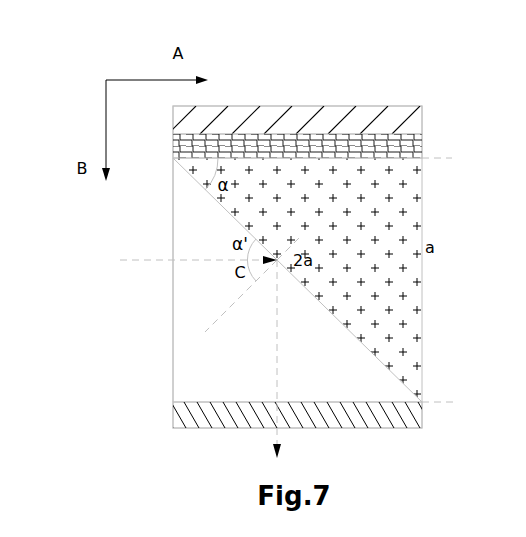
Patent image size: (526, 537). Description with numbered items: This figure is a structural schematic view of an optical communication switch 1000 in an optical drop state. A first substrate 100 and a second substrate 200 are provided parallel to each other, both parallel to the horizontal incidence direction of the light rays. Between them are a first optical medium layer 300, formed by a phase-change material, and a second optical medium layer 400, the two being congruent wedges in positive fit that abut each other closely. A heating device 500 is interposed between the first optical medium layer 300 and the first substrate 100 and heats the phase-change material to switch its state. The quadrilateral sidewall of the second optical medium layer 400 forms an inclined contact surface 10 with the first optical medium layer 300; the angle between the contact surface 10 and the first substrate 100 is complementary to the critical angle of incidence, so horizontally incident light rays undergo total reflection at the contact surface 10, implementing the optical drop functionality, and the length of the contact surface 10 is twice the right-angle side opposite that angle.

The optical communication switch 1000 is at (318, 84).
The first substrate 100 is at (412, 124).
The heating device 500 is at (413, 150).
The first optical medium layer 300 is at (405, 322).
The contact surface 10 is at (383, 360).
The second optical medium layer 400 is at (192, 353).
The second substrate 200 is at (415, 417).